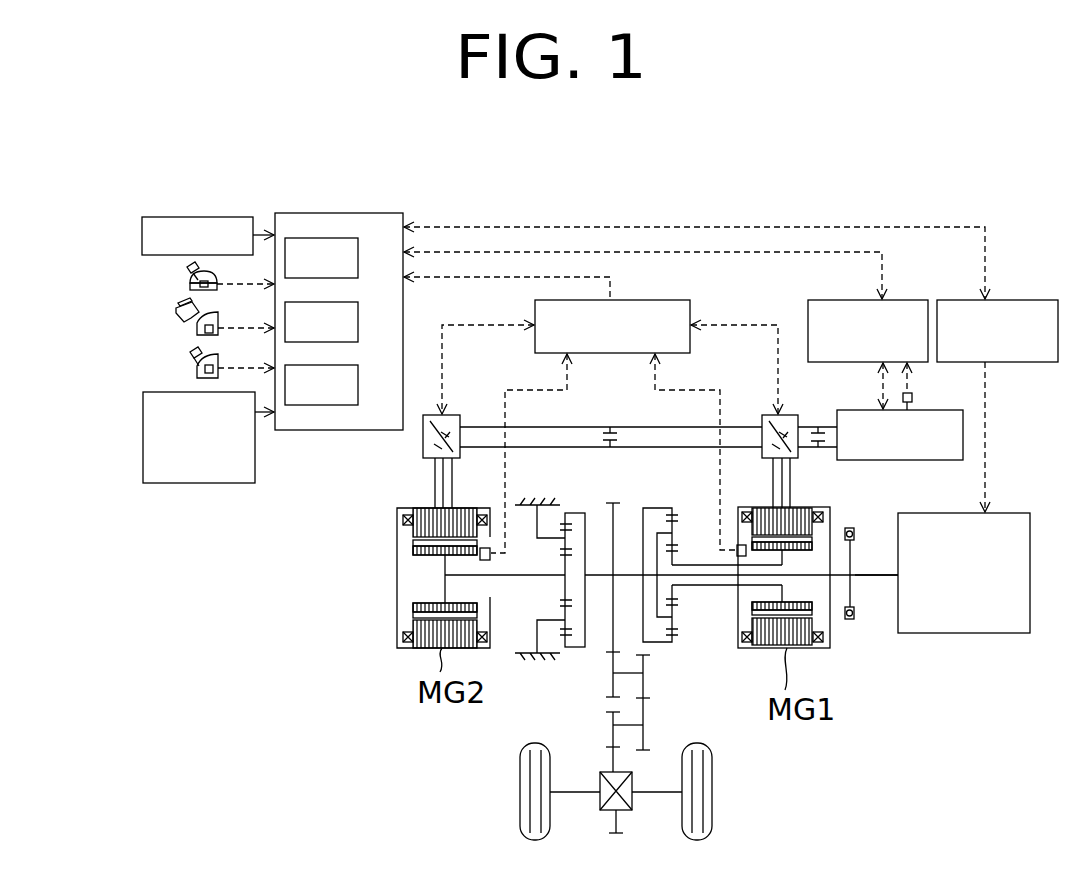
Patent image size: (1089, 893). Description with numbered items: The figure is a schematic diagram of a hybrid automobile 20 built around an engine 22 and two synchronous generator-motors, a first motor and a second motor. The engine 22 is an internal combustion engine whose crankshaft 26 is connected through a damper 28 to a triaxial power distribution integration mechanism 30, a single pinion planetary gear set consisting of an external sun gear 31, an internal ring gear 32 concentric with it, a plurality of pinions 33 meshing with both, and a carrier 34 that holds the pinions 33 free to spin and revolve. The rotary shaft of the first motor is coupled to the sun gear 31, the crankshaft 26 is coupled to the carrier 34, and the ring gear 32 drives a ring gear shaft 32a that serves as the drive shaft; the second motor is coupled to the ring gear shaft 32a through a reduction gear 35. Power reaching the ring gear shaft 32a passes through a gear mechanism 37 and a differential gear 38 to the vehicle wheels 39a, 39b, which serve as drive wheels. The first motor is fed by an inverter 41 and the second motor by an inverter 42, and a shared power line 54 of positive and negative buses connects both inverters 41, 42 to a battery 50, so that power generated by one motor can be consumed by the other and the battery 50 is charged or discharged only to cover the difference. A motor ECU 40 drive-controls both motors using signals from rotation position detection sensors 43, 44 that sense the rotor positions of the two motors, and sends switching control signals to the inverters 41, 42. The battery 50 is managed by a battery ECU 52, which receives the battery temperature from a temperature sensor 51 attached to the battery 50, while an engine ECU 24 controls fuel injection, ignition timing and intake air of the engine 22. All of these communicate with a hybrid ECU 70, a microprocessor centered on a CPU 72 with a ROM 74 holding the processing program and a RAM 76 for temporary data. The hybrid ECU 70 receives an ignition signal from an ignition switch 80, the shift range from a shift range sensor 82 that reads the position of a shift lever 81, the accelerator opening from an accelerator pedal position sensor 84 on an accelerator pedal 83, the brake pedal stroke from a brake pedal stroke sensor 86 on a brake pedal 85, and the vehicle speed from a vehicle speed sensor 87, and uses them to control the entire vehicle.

The hybrid automobile 20 is at (360, 680).
The engine 22 is at (963, 633).
The engine ECU 24 is at (1035, 300).
The crankshaft 26 is at (877, 575).
The damper 28 is at (850, 618).
The power distribution integration mechanism 30 is at (768, 566).
The sun gear 31 is at (678, 593).
The ring gear 32 is at (676, 638).
The ring gear shaft 32a is at (598, 573).
The pinions 33 is at (678, 622).
The carrier 34 is at (647, 508).
The reduction gear 35 is at (573, 501).
The gear mechanism 37 is at (655, 684).
The differential gear 38 is at (600, 780).
The vehicle wheel 39a is at (520, 773).
The vehicle wheel 39b is at (712, 773).
The motor ECU 40 is at (690, 300).
The inverter 41 is at (798, 422).
The inverter 42 is at (460, 421).
The rotation position detection sensor 43 is at (741, 545).
The rotation position detection sensor 44 is at (484, 548).
The battery 50 is at (850, 462).
The temperature sensor 51 is at (912, 398).
The battery ECU 52 is at (920, 300).
The power line 54 is at (575, 447).
The hybrid ECU 70 is at (345, 213).
The CPU 72 is at (358, 260).
The ROM 74 is at (358, 323).
The RAM 76 is at (358, 386).
The ignition switch 80 is at (142, 228).
The shift lever 81 is at (188, 268).
The shift range sensor 82 is at (190, 290).
The accelerator pedal 83 is at (180, 308).
The accelerator pedal position sensor 84 is at (198, 333).
The brake pedal 85 is at (191, 353).
The brake pedal stroke sensor 86 is at (198, 377).
The vehicle speed sensor 87 is at (143, 420).